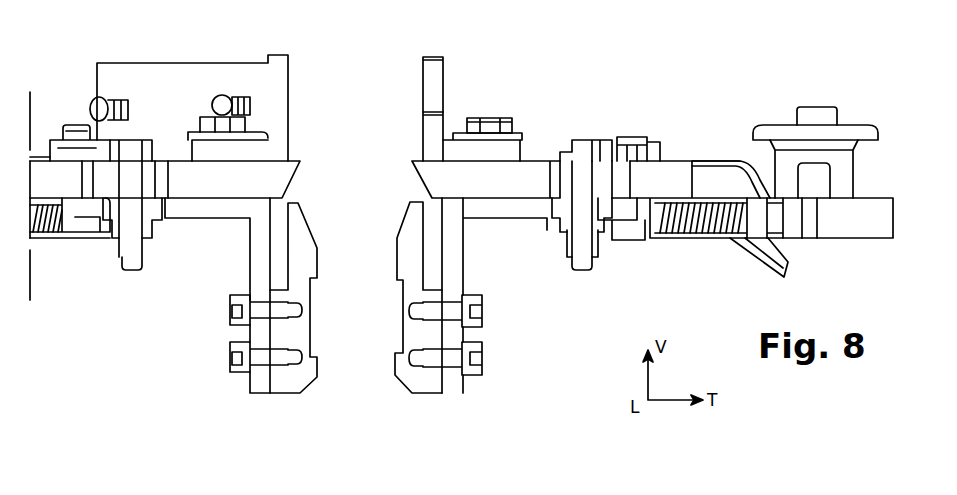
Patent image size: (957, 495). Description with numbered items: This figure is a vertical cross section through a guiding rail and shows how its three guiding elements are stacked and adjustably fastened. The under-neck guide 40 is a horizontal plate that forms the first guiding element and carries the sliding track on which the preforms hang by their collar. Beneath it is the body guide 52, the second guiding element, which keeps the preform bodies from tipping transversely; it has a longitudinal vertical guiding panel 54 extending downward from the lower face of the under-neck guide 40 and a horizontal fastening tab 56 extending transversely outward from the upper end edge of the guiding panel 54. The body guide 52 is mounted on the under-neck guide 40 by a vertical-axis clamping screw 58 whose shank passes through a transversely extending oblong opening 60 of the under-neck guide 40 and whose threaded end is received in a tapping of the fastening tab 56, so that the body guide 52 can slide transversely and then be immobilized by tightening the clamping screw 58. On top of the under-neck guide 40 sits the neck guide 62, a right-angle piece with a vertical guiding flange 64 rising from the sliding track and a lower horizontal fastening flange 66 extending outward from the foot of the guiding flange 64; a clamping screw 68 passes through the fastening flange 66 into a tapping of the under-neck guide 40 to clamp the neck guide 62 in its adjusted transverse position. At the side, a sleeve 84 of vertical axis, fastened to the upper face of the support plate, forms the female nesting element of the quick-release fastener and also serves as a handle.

The under-neck guide 40 is at (670, 180).
The body guide 52 is at (500, 210).
The guiding panel 54 is at (452, 267).
The fastening tab 56 is at (537, 207).
The clamping screw 58 is at (583, 170).
The oblong opening 60 is at (605, 175).
The neck guide 62 is at (423, 73).
The guiding flange 64 is at (423, 95).
The fastening flange 66 is at (530, 152).
The clamping screw 68 is at (490, 122).
The sleeve 84 is at (842, 180).